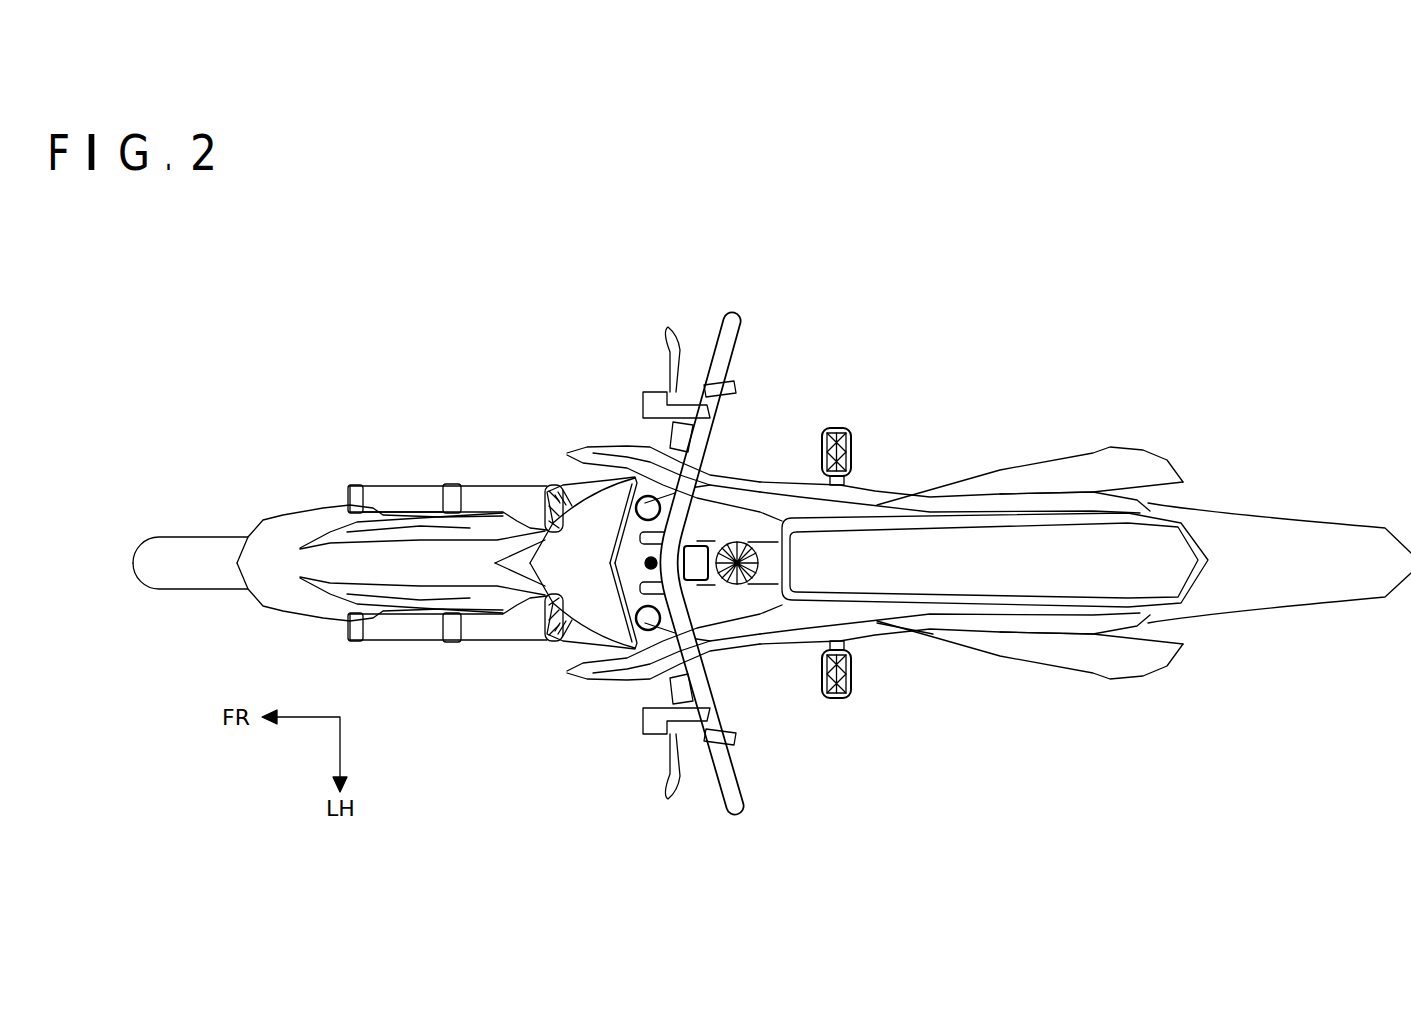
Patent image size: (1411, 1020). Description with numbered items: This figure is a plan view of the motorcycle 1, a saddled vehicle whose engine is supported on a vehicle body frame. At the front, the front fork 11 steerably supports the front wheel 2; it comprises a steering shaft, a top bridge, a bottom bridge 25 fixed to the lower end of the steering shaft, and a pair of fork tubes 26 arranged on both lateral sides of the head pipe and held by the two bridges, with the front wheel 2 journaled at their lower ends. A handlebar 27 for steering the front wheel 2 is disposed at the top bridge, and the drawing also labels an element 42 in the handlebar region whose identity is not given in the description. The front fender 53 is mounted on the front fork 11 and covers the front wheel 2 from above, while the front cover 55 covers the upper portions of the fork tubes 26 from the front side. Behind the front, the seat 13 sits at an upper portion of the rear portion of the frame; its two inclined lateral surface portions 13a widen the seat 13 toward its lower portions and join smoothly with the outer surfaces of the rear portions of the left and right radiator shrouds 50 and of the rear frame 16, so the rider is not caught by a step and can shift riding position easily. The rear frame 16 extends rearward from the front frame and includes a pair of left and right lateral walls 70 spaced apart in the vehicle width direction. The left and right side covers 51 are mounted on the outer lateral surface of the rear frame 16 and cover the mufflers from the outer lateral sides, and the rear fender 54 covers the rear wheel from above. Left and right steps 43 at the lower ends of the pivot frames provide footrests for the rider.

The motorcycle 1 is at (345, 319).
The front wheel 2 is at (182, 535).
The front fork 11 is at (478, 482).
The seat 13 is at (950, 548).
The lateral surface portions 13a is at (990, 530).
The rear frame 16 is at (913, 636).
The bottom bridge 25 is at (553, 641).
The fork tubes 26 is at (515, 485).
The handlebar 27 is at (710, 683).
The handlebar 42 is at (722, 530).
The steps 43 is at (858, 432).
The radiator shrouds 50 is at (628, 444).
The side covers 51 is at (1062, 458).
The front fender 53 is at (285, 527).
The rear fender 54 is at (1298, 540).
The front cover 55 is at (572, 542).
The lateral walls 70 is at (918, 497).